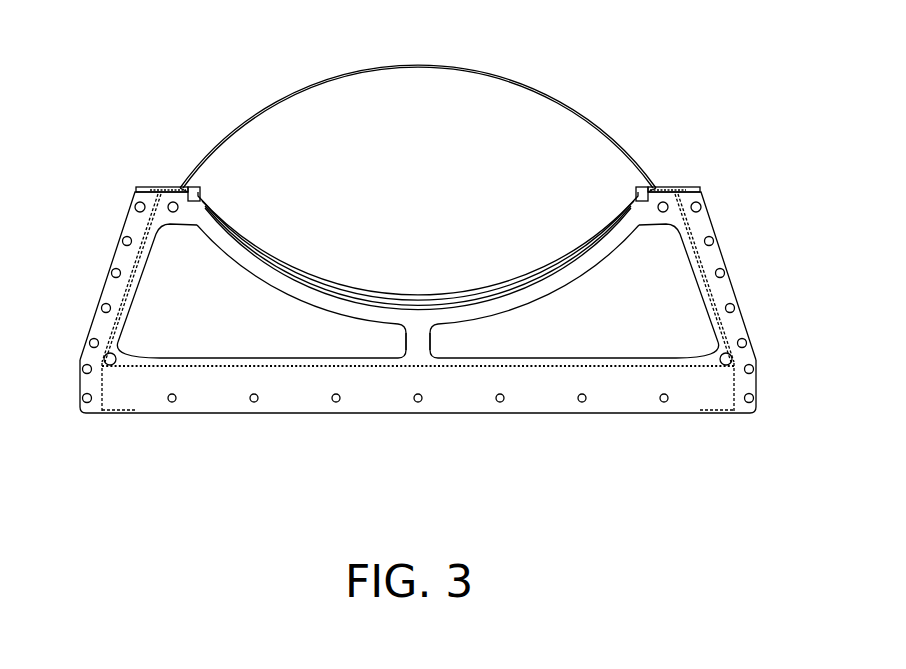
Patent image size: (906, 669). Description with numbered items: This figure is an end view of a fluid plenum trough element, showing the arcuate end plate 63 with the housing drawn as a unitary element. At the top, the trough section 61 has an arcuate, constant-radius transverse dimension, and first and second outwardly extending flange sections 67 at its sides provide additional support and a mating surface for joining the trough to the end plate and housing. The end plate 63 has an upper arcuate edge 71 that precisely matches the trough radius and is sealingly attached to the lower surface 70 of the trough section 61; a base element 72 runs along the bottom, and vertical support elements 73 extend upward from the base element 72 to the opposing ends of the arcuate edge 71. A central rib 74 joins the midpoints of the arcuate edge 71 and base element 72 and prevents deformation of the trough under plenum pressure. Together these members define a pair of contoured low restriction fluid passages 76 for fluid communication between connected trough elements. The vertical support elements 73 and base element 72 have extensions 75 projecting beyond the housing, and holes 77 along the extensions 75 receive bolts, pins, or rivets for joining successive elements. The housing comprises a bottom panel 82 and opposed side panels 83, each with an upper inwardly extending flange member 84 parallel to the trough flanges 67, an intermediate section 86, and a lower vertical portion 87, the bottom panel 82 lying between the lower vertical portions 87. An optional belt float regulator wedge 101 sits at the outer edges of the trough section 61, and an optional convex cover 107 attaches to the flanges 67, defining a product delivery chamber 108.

The trough section 61 is at (310, 285).
The arcuate end plate 63 is at (526, 417).
The outwardly extending flange section 67 is at (180, 188).
The lower surface of trough section 70 is at (242, 242).
The upper arcuate edge 71 is at (502, 308).
The base element 72 is at (315, 401).
The vertical support element 73 is at (112, 291).
The central rib 74 is at (422, 348).
The extension 75 is at (714, 257).
The low restriction fluid passage 76 is at (235, 345).
The hole 77 is at (136, 202).
The bottom panel 82 is at (393, 367).
The side panel 83 is at (124, 263).
The upper inwardly extending flange member 84 is at (170, 189).
The intermediate section 86 is at (152, 215).
The lower vertical portion 87 is at (85, 362).
The belt float regulator wedge 101 is at (200, 196).
The cover 107 is at (530, 88).
The product delivery chamber 108 is at (350, 93).